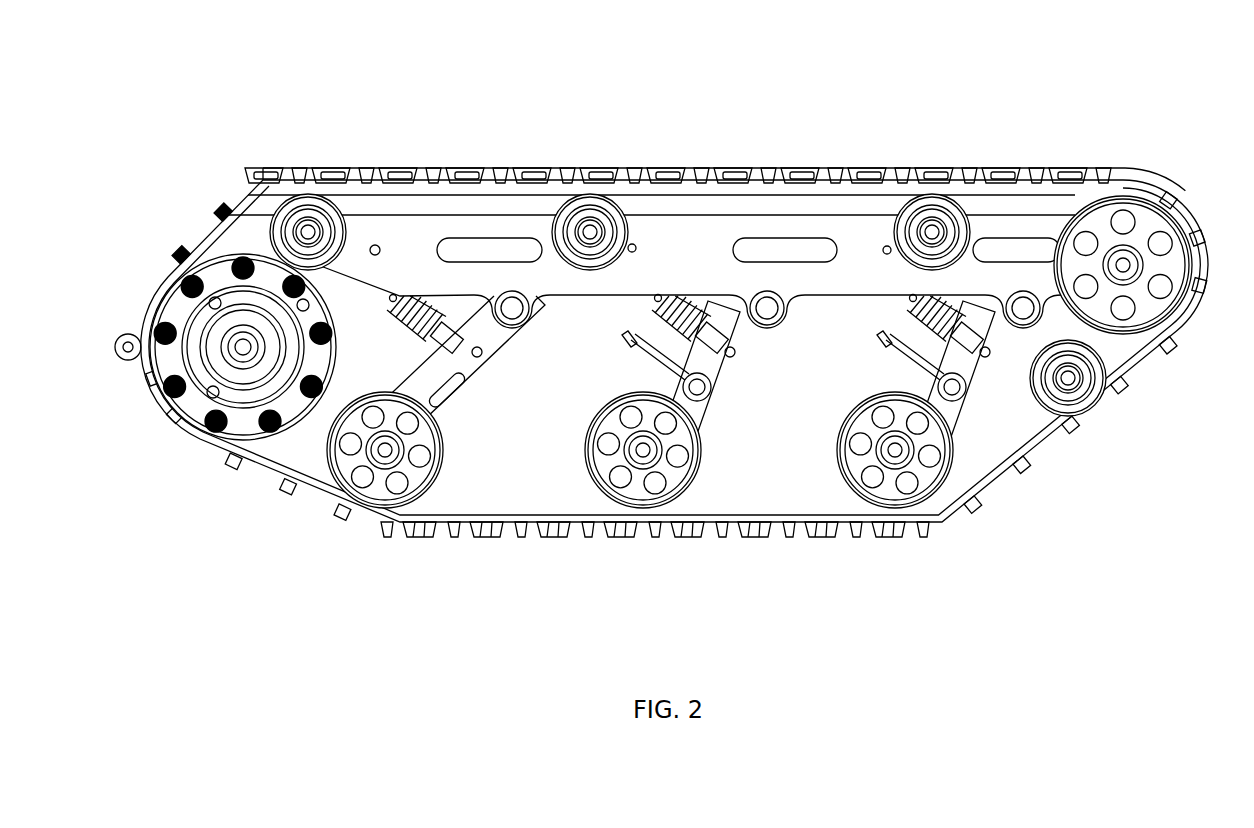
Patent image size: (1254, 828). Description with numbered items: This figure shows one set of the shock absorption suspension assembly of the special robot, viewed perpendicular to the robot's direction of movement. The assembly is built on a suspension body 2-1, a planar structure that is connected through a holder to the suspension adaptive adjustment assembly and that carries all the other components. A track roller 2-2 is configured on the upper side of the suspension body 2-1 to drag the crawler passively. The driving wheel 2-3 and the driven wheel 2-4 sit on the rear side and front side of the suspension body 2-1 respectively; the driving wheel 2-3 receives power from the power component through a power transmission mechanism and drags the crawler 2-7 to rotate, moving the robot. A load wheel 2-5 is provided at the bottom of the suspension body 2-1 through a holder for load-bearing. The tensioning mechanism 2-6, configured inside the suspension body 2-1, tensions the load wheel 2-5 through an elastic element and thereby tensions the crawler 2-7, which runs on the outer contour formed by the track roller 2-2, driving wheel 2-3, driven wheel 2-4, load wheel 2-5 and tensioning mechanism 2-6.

The suspension body 2-1 is at (747, 232).
The track roller 2-2 is at (952, 200).
The driving wheel 2-3 is at (217, 392).
The driven wheel 2-4 is at (1161, 375).
The load wheel 2-5 is at (652, 483).
The tensioning mechanism 2-6 is at (420, 292).
The crawler 2-7 is at (996, 492).